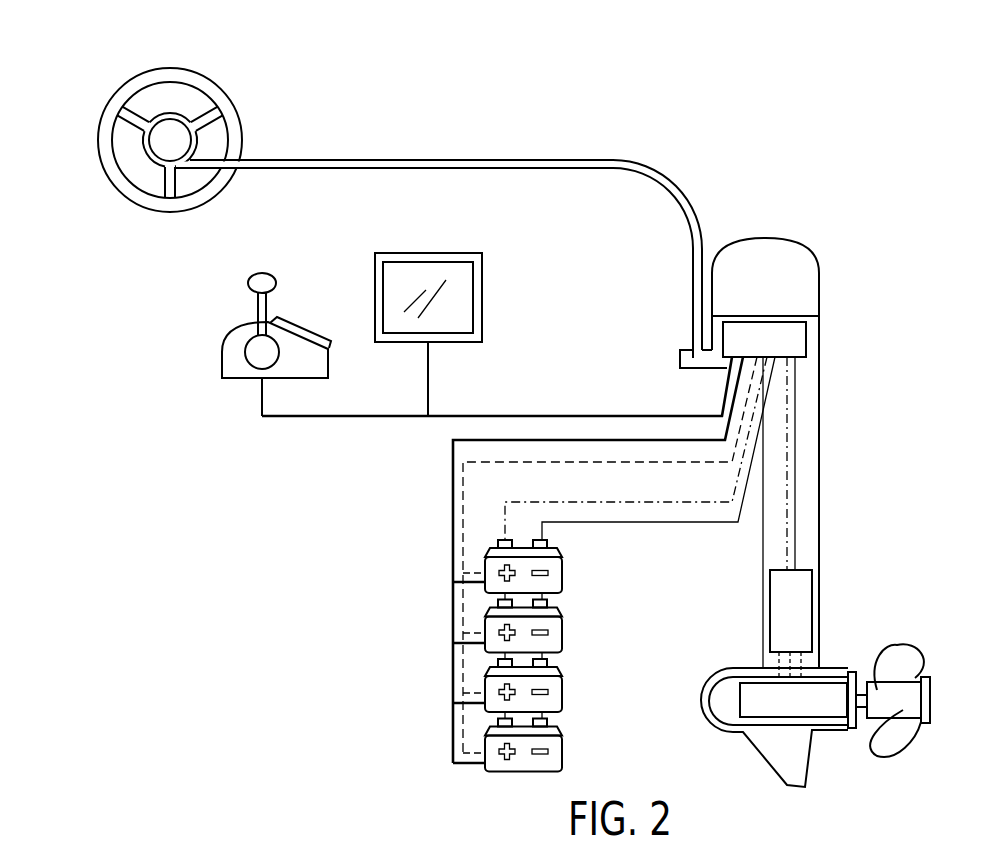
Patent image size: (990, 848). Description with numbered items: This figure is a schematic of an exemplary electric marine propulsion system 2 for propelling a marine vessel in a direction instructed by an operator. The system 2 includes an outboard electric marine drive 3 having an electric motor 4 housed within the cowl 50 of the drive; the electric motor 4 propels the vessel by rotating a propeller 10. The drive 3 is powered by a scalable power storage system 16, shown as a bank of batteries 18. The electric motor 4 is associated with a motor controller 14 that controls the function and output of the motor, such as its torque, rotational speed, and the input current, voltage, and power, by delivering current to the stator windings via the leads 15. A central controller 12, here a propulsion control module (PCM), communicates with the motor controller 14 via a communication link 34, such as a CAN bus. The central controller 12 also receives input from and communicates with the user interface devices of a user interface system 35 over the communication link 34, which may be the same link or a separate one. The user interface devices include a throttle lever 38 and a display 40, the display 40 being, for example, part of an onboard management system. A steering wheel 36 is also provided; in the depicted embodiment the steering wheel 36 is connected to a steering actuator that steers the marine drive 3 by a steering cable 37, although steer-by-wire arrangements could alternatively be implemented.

The electric marine propulsion system 2 is at (742, 116).
The electric marine drive 3 is at (787, 423).
The electric motor 4 is at (786, 722).
The propeller 10 is at (903, 742).
The central controller 12 is at (806, 340).
The motor controller 14 is at (812, 593).
The leads 15 is at (778, 658).
The power storage system 16 is at (426, 635).
The batteries 18 is at (564, 558).
The communication link 34 is at (453, 476).
The user interface system 35 is at (493, 98).
The steering wheel 36 is at (201, 77).
The steering cable 37 is at (413, 160).
The throttle lever 38 is at (262, 272).
The display 40 is at (430, 253).
The cowl 50 is at (766, 238).